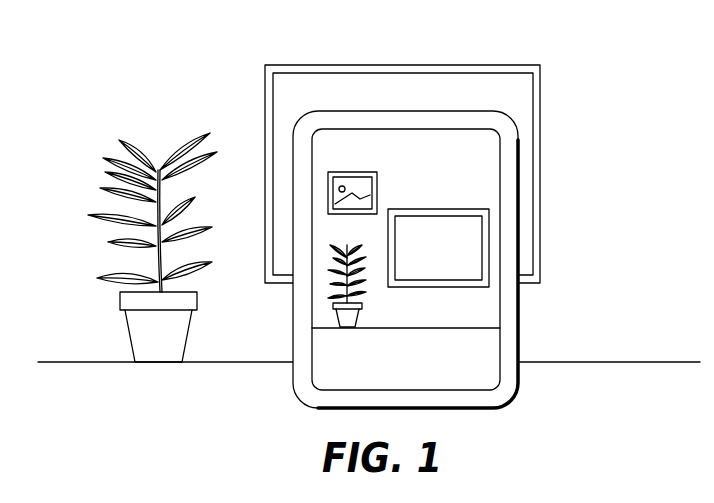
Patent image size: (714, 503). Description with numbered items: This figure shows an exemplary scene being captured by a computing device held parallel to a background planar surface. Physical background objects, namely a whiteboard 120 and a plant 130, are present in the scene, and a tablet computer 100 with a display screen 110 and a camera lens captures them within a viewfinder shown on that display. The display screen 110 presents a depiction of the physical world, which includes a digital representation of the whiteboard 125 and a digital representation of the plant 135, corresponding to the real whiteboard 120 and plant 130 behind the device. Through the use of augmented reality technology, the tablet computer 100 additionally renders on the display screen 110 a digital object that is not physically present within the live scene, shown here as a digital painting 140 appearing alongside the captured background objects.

The tablet computer 100 is at (510, 400).
The display screen 110 is at (310, 372).
The whiteboard 120 is at (541, 100).
The digital representation of whiteboard 125 is at (438, 208).
The plant 130 is at (138, 140).
The digital representation of plant 135 is at (360, 321).
The digital painting 140 is at (352, 172).